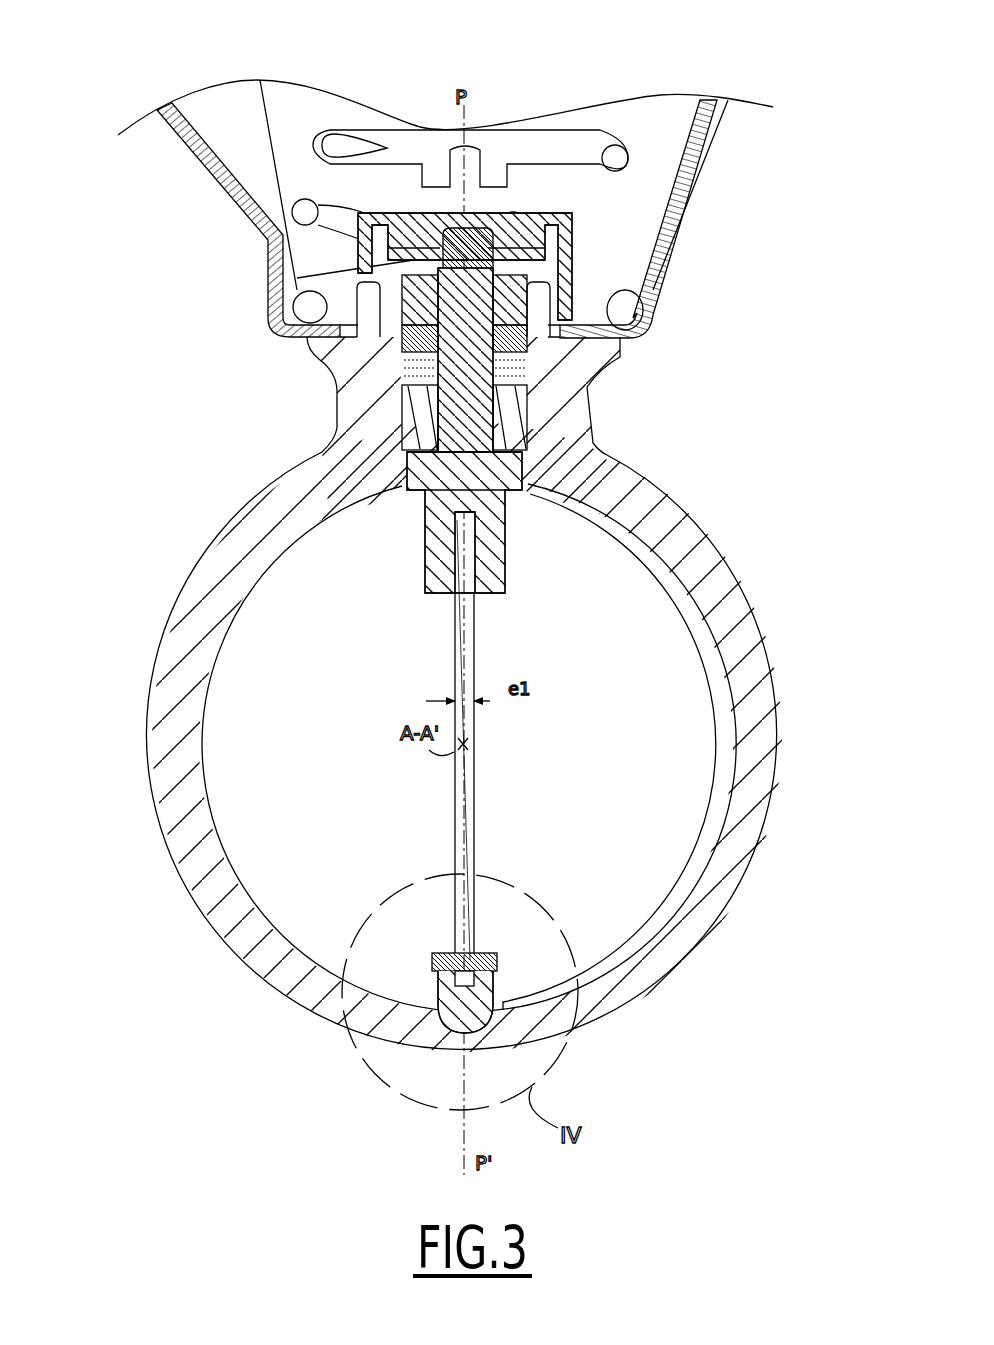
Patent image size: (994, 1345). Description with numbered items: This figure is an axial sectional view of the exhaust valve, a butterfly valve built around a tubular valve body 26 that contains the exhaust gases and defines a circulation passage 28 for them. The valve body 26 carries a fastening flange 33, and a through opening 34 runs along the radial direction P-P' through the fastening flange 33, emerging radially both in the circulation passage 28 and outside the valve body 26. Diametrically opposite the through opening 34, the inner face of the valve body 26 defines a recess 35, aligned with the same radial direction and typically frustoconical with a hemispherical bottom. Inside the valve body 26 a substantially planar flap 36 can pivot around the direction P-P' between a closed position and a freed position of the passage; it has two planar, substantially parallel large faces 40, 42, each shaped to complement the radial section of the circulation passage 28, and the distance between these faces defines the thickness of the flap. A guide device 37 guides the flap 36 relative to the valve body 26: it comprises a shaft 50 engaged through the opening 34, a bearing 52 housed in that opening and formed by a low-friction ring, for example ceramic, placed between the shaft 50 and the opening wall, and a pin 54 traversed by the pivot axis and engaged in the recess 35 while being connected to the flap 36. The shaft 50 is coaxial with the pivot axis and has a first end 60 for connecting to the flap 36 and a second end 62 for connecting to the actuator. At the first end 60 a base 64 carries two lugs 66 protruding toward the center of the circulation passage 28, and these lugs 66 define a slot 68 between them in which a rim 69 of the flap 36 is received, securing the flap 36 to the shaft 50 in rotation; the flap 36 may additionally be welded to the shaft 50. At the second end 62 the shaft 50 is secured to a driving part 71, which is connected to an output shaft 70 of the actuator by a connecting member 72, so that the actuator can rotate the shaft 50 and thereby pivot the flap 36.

The valve body 26 is at (668, 510).
The circulation passage 28 is at (291, 812).
The fastening flange 33 is at (325, 427).
The through opening 34 is at (427, 413).
The recess 35 is at (445, 1050).
The flap 36 is at (452, 822).
The guide device 37 is at (552, 465).
The large face 40 is at (452, 782).
The large face 42 is at (475, 722).
The shaft 50 is at (437, 475).
The bearing 52 is at (628, 340).
The pin 54 is at (480, 987).
The first end 60 is at (520, 586).
The second end 62 is at (457, 233).
The base 64 is at (528, 470).
The lugs 66 is at (439, 557).
The slot 68 is at (456, 594).
The rim 69 is at (476, 600).
The output shaft 70 is at (497, 135).
The driving part 71 is at (293, 283).
The connecting member 72 is at (617, 158).